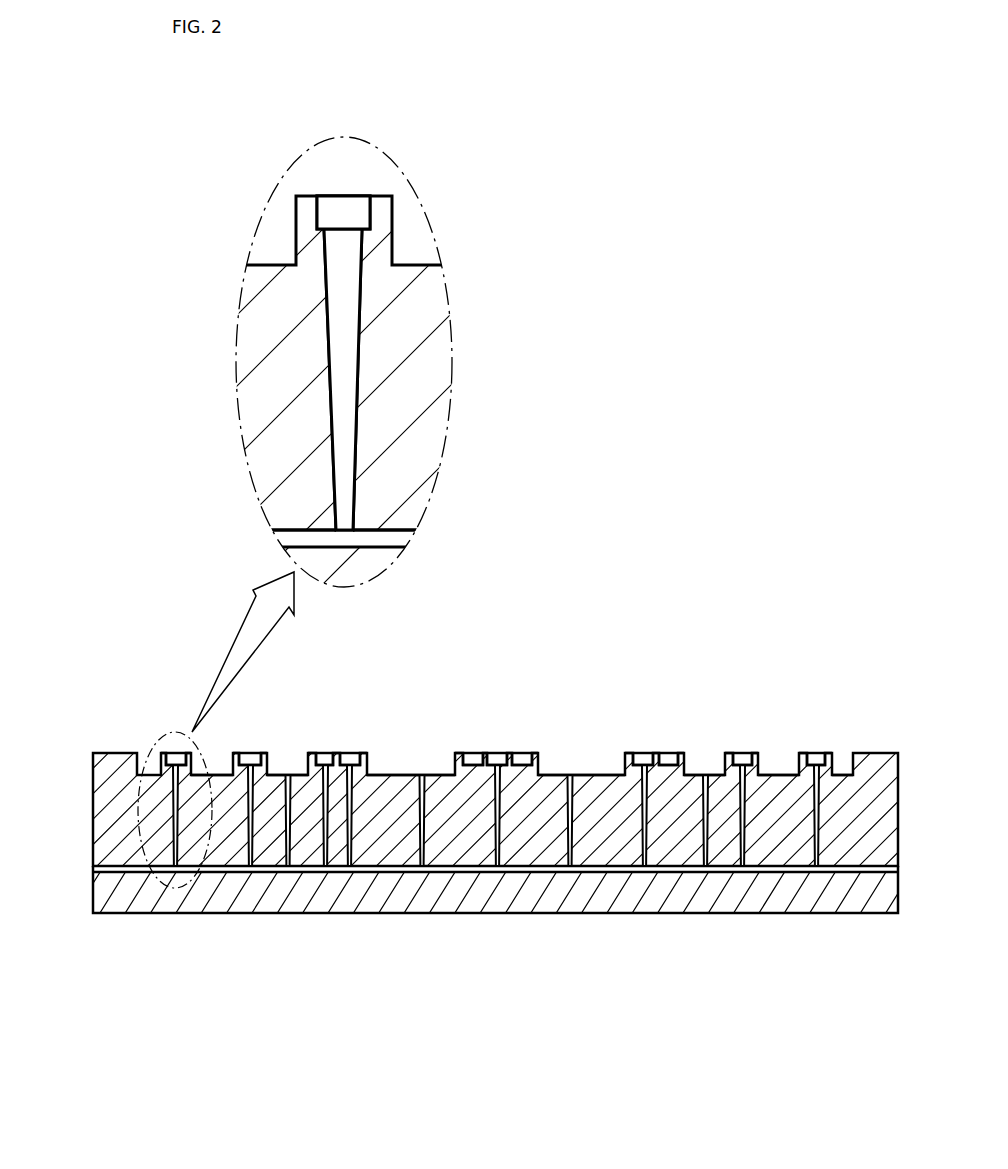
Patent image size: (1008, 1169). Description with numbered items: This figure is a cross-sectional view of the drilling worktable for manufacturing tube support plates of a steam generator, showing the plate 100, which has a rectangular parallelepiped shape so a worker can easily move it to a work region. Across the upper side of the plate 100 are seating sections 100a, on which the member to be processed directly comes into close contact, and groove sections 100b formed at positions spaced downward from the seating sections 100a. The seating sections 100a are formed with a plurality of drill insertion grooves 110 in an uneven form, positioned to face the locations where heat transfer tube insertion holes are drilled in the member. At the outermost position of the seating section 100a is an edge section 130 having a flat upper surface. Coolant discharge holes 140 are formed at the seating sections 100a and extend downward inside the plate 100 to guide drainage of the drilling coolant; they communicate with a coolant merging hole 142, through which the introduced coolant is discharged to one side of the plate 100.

The plate 100 is at (683, 640).
The seating section 100a is at (371, 757).
The groove section 100b is at (433, 773).
The drill insertion groove 110 is at (170, 762).
The edge section 130 is at (113, 752).
The coolant discharge hole 140 is at (176, 822).
The coolant merging hole 142 is at (132, 873).